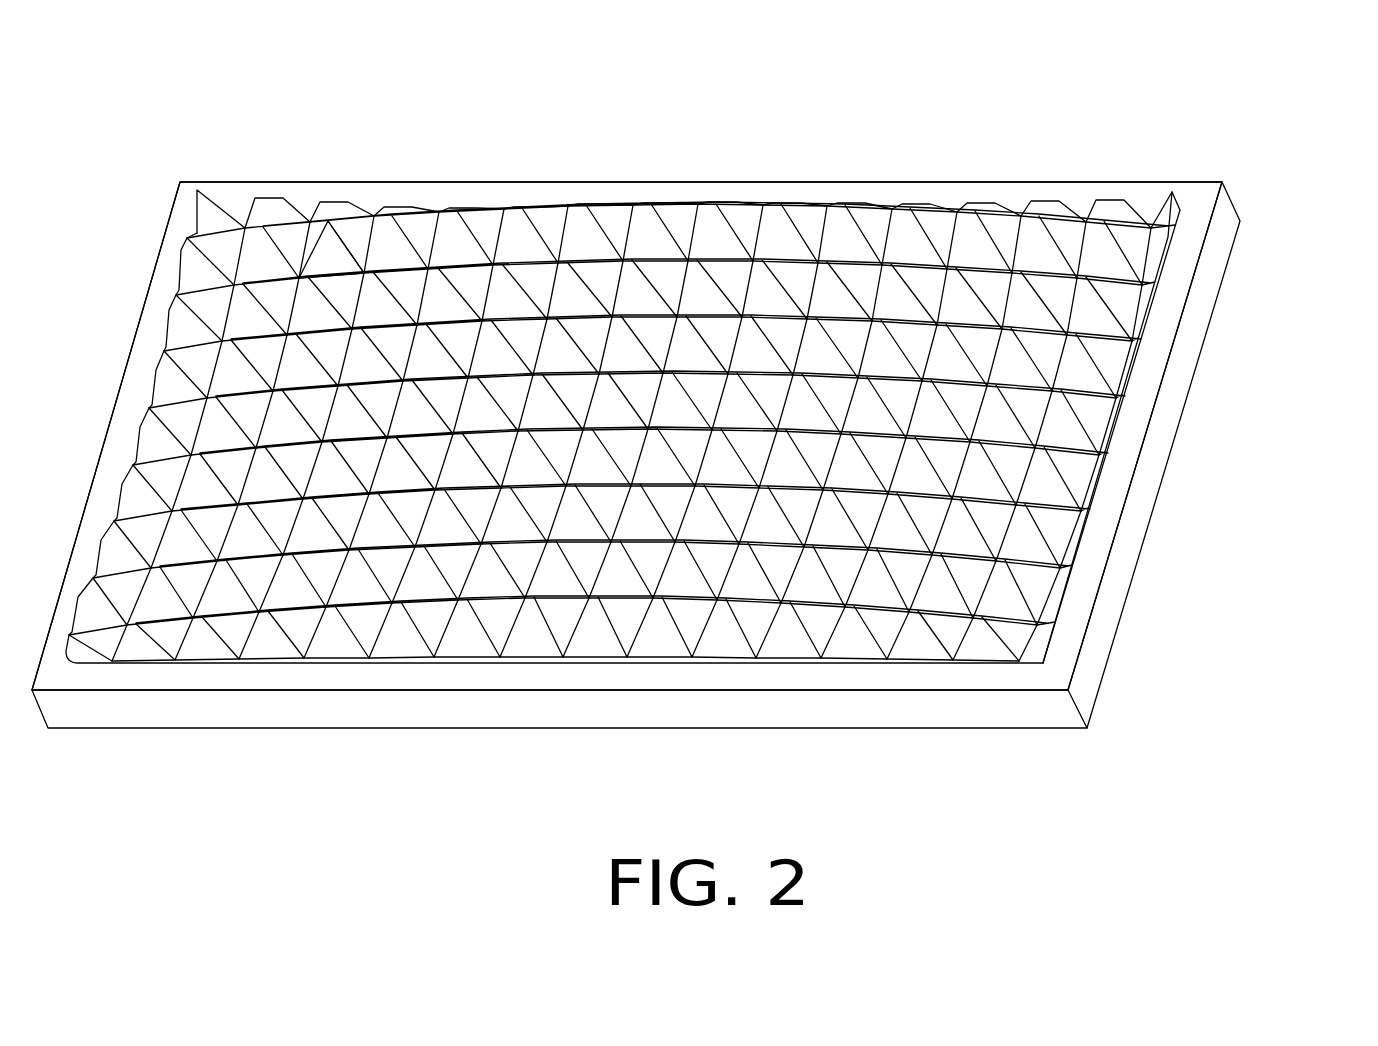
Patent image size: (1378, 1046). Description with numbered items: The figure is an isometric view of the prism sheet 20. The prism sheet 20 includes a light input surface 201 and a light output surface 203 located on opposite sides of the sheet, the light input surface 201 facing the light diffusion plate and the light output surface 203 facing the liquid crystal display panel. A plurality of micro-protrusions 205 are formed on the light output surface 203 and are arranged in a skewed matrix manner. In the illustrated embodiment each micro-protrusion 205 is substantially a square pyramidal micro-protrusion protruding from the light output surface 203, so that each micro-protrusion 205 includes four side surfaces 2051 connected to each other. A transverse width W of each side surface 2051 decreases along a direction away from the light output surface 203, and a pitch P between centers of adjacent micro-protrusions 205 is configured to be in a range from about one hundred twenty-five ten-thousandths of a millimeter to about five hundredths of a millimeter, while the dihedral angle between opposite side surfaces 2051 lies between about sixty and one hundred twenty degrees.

The prism sheet 20 is at (672, 48).
The light input surface 201 is at (1175, 440).
The light output surface 203 is at (1192, 195).
The micro-protrusions 205 is at (653, 205).
The side surfaces 2051 is at (347, 232).
The transverse width W is at (398, 312).
The pitch P is at (977, 220).